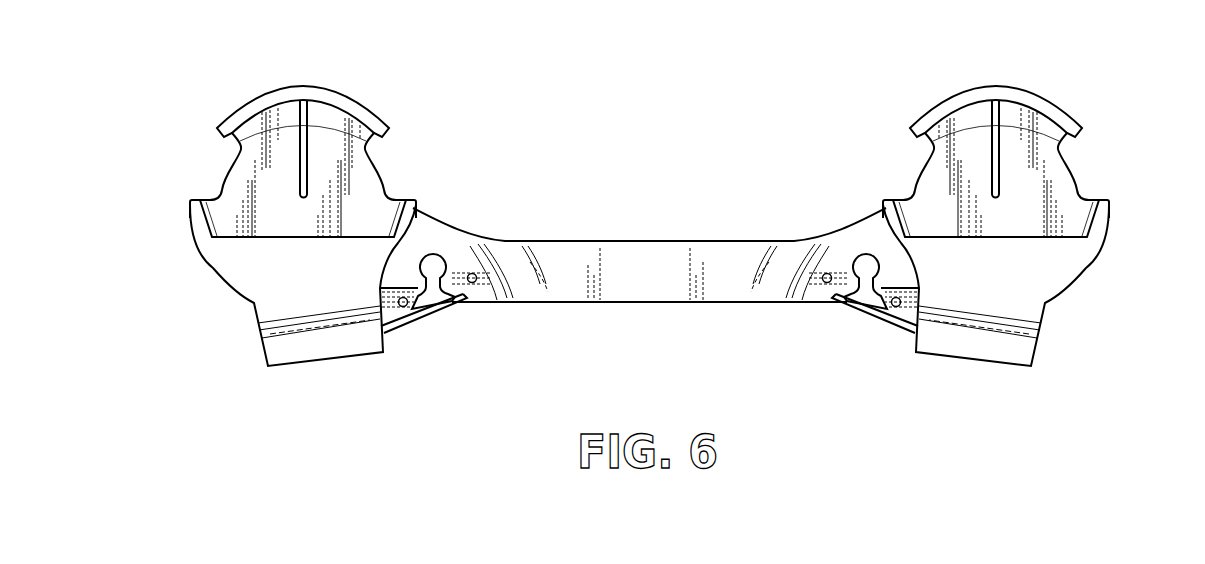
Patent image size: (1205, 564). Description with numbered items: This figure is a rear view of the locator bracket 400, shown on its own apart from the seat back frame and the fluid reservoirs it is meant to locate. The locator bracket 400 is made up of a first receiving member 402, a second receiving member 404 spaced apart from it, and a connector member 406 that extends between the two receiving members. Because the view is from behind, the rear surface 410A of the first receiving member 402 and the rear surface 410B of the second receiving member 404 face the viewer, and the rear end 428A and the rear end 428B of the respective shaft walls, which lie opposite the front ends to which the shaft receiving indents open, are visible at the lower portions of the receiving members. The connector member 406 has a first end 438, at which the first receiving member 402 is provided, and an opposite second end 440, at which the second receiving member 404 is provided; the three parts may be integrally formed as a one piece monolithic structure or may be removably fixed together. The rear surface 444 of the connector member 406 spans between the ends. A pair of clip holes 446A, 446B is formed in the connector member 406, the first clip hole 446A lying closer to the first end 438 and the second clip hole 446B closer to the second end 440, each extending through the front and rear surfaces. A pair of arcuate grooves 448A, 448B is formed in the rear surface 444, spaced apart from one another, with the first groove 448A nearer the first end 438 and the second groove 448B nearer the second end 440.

The locator bracket 400 is at (644, 227).
The first receiving member 402 is at (1032, 193).
The second receiving member 404 is at (261, 185).
The connector member 406 is at (735, 226).
The rear surface 410A is at (1053, 181).
The rear surface 410B is at (238, 183).
The rear end 428A is at (970, 347).
The rear end 428B is at (325, 350).
The first end 438 is at (890, 331).
The second end 440 is at (407, 333).
The rear surface 444 is at (652, 257).
The first clip hole 446A is at (865, 258).
The second clip hole 446B is at (433, 258).
The first groove 448A is at (777, 267).
The second groove 448B is at (525, 257).